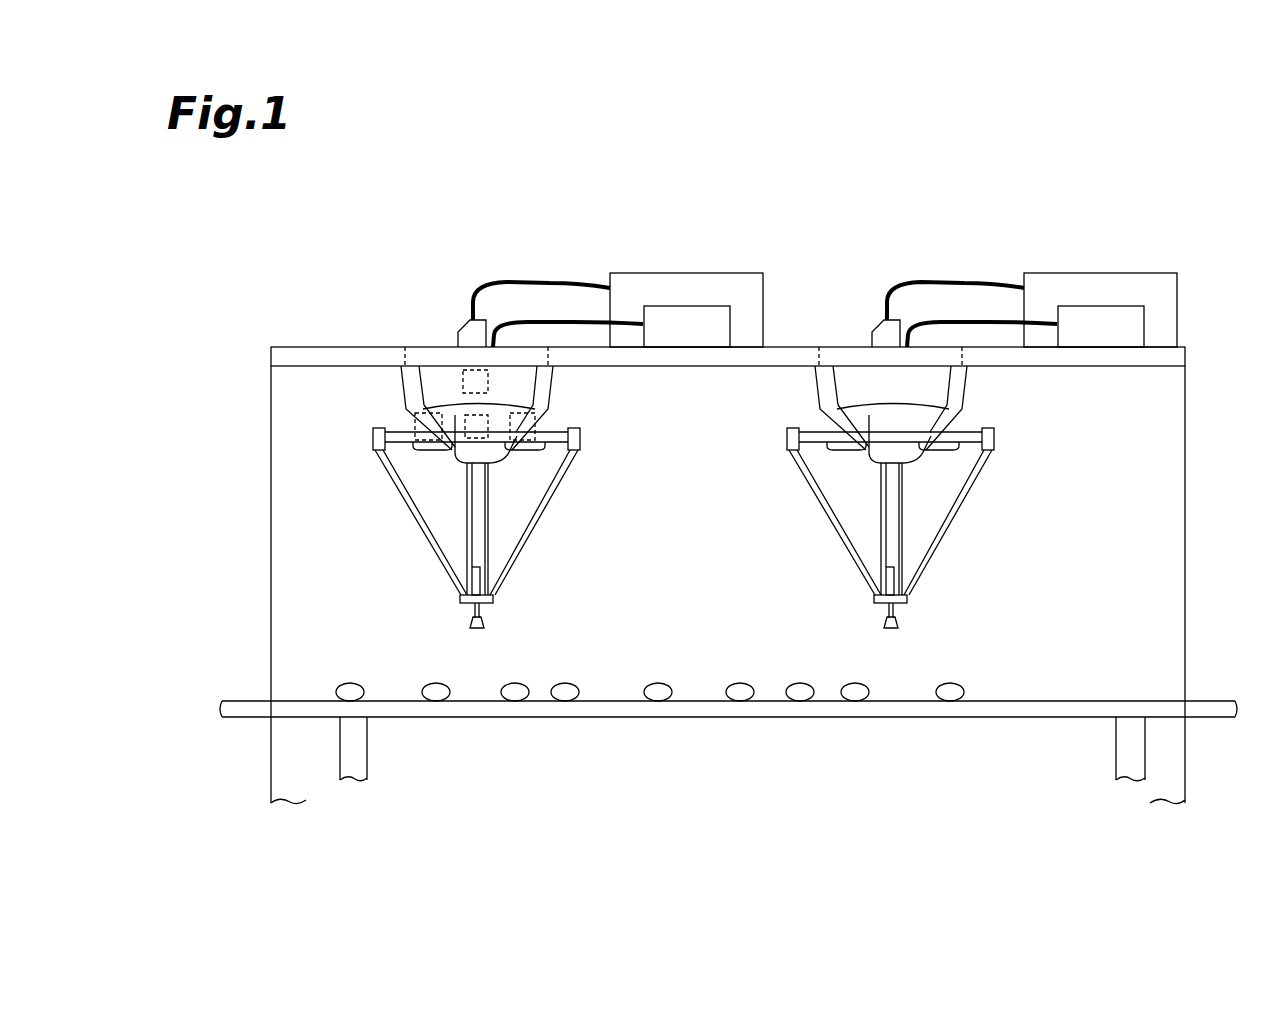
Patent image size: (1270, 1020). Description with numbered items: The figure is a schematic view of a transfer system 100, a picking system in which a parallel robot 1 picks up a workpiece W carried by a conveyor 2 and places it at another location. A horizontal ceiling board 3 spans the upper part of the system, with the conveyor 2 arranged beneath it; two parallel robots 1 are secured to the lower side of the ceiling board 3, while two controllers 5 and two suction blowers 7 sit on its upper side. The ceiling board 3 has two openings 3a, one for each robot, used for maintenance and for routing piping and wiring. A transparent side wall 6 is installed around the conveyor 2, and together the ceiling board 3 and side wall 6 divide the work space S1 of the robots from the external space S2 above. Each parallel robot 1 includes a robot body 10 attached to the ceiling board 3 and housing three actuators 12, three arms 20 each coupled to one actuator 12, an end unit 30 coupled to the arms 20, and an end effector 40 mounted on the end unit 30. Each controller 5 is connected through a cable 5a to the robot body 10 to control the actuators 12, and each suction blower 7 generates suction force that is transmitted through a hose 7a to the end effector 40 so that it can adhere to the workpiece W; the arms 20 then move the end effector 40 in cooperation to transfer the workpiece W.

The transfer system 100 is at (563, 182).
The parallel robot 1 is at (588, 400).
The conveyor 2 is at (244, 701).
The ceiling board 3 is at (366, 346).
The opening 3a is at (406, 346).
The controller 5 is at (687, 273).
The cable 5a is at (505, 281).
The side wall 6 is at (1186, 437).
The suction blower 7 is at (707, 306).
The hose 7a is at (558, 321).
The robot body 10 is at (374, 379).
The actuator 12 is at (415, 413).
The arm 20 is at (561, 507).
The end unit 30 is at (524, 590).
The end effector 40 is at (505, 624).
The workpiece W is at (659, 683).
The work space S1 is at (300, 500).
The external space S2 is at (300, 314).